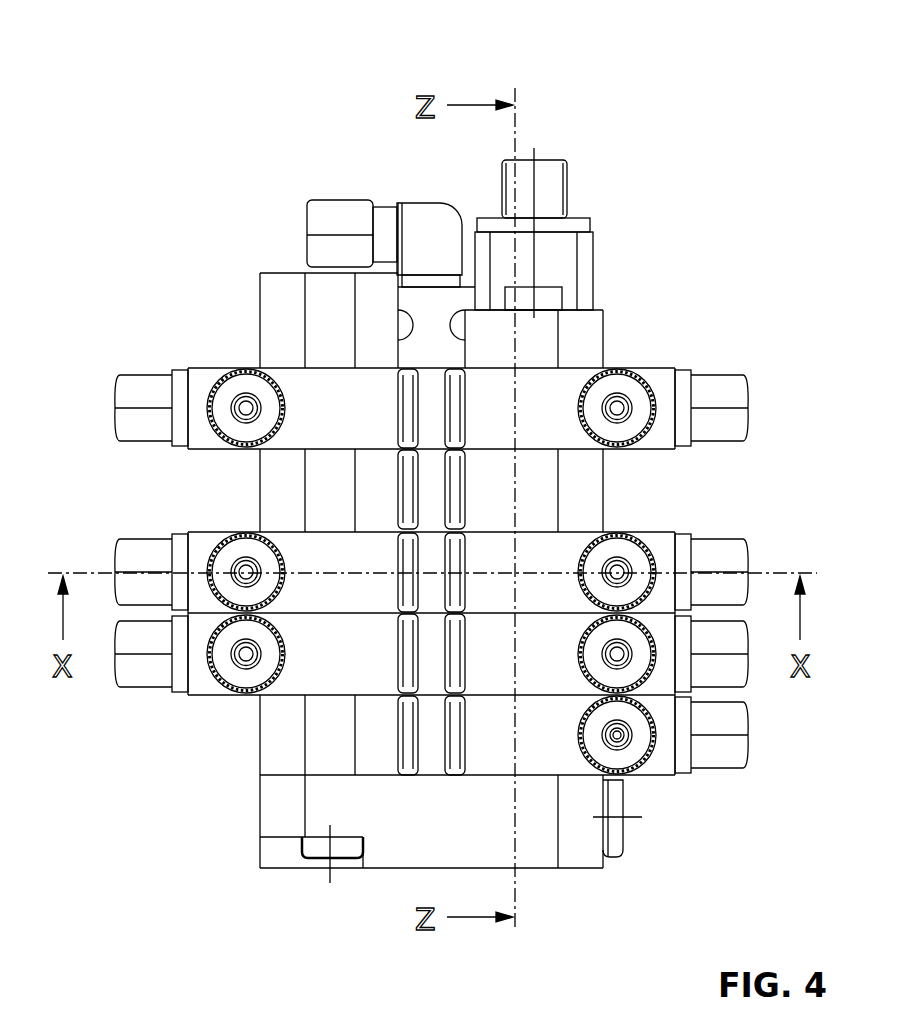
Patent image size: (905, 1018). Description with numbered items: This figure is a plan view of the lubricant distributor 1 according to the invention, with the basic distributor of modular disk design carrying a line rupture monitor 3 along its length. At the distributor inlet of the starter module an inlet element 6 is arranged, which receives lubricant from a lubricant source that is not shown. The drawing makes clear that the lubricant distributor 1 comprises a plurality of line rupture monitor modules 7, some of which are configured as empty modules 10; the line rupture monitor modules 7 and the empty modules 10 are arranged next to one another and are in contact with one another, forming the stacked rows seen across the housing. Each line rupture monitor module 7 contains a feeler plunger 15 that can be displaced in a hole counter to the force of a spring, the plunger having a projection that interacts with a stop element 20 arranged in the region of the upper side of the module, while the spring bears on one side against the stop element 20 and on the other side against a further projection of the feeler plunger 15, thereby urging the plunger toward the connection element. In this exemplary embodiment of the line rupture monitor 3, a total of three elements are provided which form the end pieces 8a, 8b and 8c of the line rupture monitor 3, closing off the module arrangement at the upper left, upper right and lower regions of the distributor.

The lubricant distributor 1 is at (222, 98).
The line rupture monitor 3 is at (645, 255).
The inlet element 6 is at (427, 230).
The line rupture monitor module 7 is at (658, 383).
The end piece 8a is at (580, 852).
The end piece 8b is at (582, 357).
The end piece 8c is at (285, 338).
The empty module 10 is at (285, 292).
The feeler plunger 15 is at (616, 737).
The stop element 20 is at (638, 735).